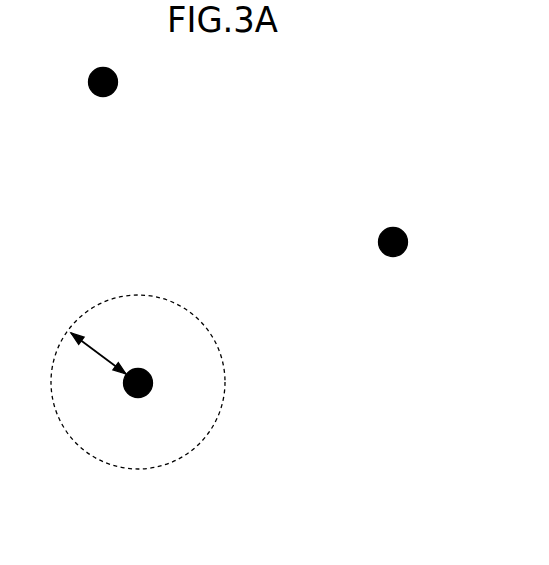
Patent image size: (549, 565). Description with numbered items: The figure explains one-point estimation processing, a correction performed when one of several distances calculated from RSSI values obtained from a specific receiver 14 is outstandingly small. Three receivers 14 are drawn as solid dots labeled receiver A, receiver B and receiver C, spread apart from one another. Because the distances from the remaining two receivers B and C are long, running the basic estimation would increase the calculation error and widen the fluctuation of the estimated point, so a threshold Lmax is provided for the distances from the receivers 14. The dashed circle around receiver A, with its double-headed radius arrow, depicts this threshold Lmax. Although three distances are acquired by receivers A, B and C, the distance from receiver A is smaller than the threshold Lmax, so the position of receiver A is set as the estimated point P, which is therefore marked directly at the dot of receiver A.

The receiver 14 is at (280, 275).
The receiver A is at (138, 382).
The receiver B is at (448, 228).
The receiver C is at (118, 83).
The estimated point P is at (143, 366).
The threshold Lmax is at (138, 382).